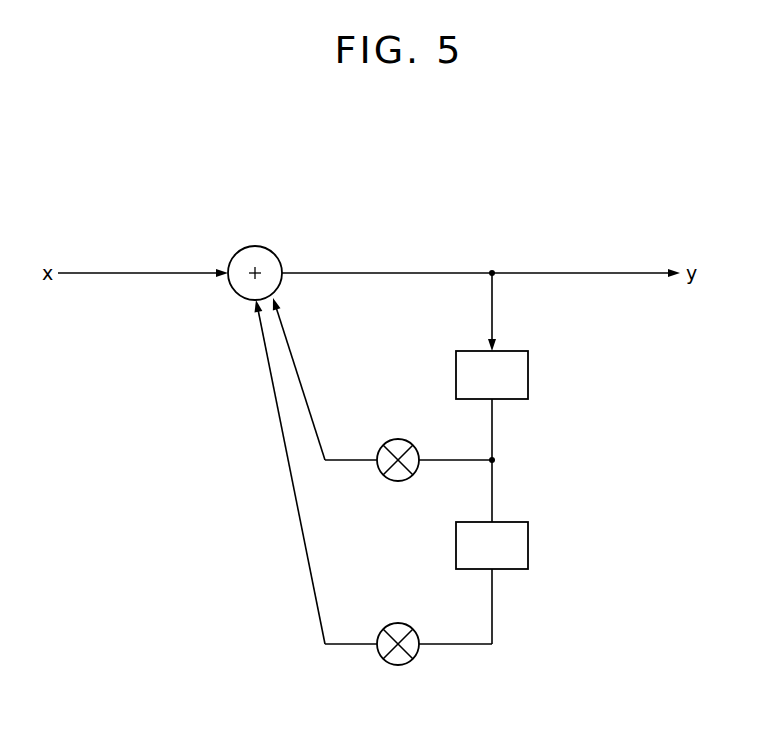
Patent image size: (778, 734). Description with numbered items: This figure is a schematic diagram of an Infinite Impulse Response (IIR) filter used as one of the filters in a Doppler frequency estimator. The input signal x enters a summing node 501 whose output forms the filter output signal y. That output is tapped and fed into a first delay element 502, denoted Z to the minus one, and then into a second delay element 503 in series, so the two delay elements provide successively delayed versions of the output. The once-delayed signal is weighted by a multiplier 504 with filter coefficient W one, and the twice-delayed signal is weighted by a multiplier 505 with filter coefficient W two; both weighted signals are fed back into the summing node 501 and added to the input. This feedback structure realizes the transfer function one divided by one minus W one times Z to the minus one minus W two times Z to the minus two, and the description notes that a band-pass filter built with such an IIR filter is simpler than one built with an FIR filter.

The adder 501 is at (255, 246).
The first delay unit 502 is at (528, 374).
The second delay unit 503 is at (528, 544).
The first multiplier 504 is at (398, 438).
The second multiplier 505 is at (398, 622).